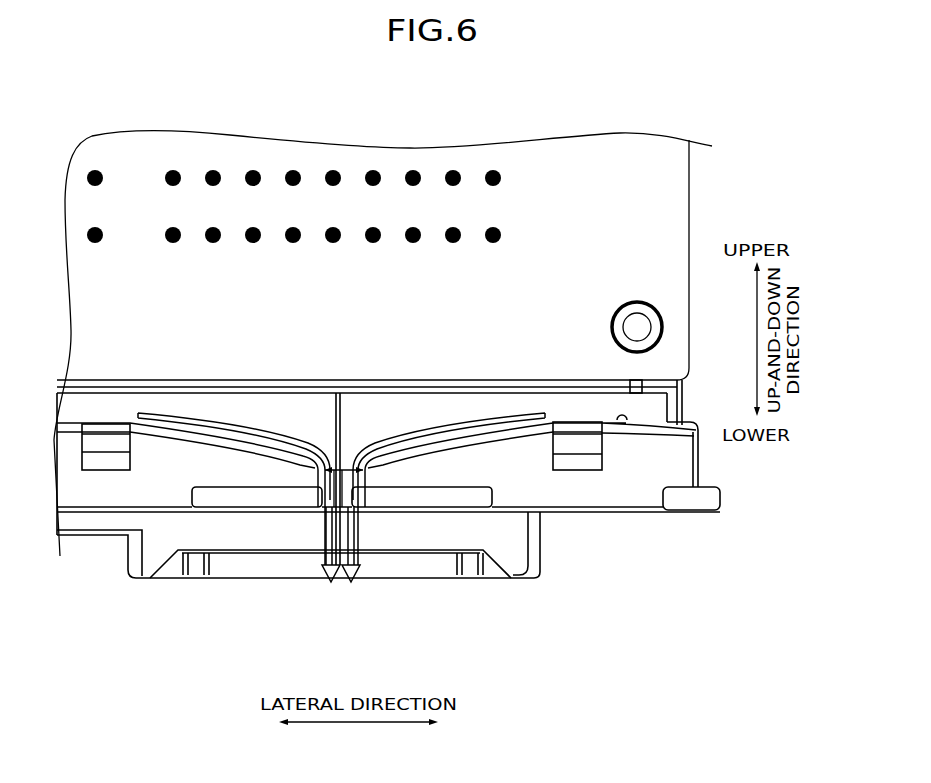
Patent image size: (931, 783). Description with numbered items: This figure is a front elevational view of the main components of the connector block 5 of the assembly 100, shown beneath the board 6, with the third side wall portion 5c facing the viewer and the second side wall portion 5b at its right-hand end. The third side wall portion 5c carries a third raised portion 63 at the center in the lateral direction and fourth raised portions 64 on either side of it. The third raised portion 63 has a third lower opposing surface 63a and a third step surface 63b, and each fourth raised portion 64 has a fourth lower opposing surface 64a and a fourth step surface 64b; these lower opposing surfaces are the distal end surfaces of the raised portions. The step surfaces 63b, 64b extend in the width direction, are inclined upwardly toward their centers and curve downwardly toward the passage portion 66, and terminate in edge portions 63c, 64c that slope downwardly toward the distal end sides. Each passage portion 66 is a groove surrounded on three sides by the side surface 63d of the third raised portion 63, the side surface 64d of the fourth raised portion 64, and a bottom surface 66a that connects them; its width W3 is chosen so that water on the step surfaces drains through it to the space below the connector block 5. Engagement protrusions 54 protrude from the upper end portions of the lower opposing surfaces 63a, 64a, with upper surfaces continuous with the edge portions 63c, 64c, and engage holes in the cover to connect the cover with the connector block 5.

The connector assembly 100 is at (158, 330).
The circuit board 6 is at (217, 135).
The connector block 5 is at (691, 385).
The second side wall portion 5b is at (689, 409).
The third side wall portion 5c is at (425, 412).
The engagement protrusion 54 is at (105, 463).
The third raised portion 63 is at (272, 476).
The third lower opposing surface 63a is at (168, 473).
The third step surface 63b is at (72, 423).
The edge portion 63c is at (152, 440).
The side surface 63d is at (322, 517).
The fourth raised portion 64 is at (400, 476).
The fourth lower opposing surface 64a is at (543, 487).
The fourth step surface 64b is at (620, 422).
The edge portion 64c is at (652, 428).
The side surface 64d is at (372, 527).
The passage portion 66 is at (343, 496).
The bottom surface 66a is at (356, 520).
The width W3 is at (345, 465).